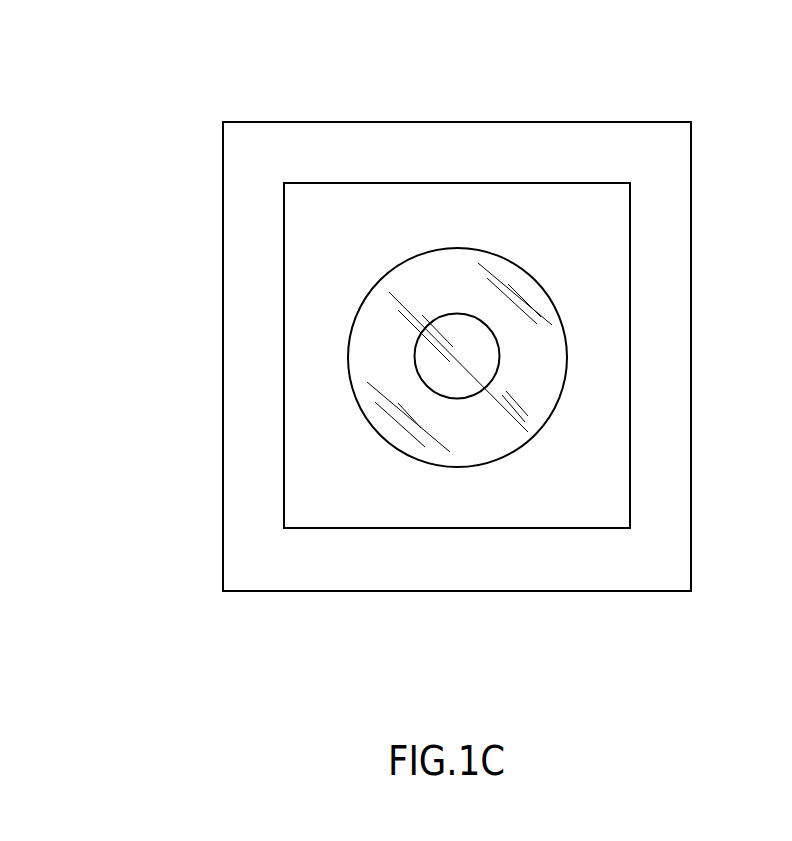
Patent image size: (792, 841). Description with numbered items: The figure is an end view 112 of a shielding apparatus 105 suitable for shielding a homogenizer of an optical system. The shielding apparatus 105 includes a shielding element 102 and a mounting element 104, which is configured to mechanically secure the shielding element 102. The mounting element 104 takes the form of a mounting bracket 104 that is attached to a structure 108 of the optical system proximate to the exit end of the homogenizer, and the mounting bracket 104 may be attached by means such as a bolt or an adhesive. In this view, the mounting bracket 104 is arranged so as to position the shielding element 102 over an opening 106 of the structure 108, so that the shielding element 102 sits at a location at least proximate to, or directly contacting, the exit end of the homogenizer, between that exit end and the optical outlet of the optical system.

The end view 112 is at (183, 82).
The structure 108 is at (565, 140).
The shielding apparatus 105 is at (255, 265).
The mounting element 104 is at (602, 202).
The shielding element 102 is at (539, 348).
The opening 106 is at (457, 355).